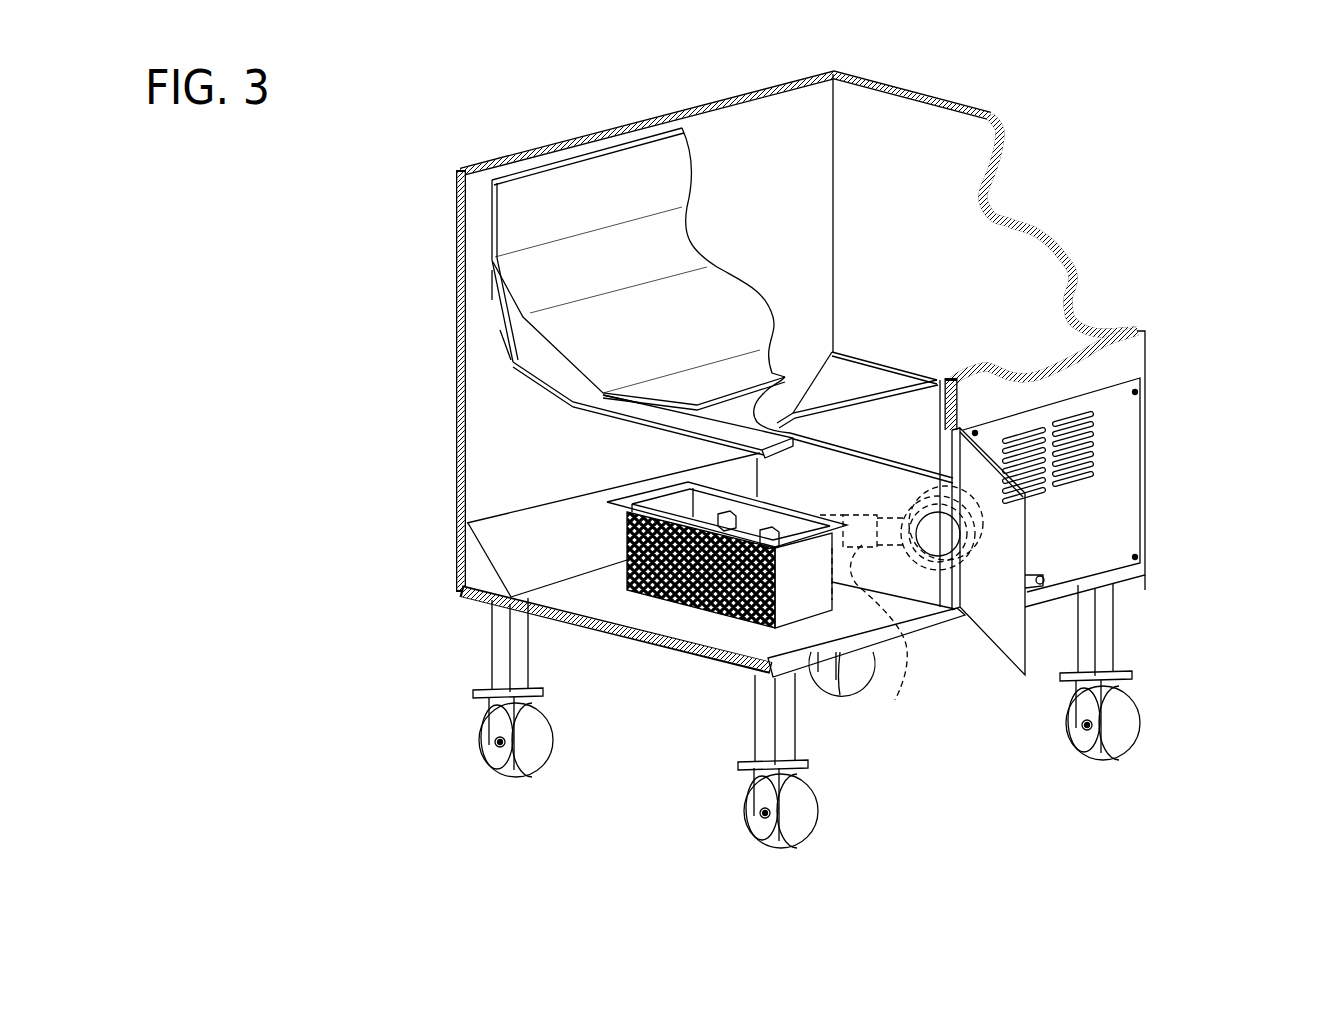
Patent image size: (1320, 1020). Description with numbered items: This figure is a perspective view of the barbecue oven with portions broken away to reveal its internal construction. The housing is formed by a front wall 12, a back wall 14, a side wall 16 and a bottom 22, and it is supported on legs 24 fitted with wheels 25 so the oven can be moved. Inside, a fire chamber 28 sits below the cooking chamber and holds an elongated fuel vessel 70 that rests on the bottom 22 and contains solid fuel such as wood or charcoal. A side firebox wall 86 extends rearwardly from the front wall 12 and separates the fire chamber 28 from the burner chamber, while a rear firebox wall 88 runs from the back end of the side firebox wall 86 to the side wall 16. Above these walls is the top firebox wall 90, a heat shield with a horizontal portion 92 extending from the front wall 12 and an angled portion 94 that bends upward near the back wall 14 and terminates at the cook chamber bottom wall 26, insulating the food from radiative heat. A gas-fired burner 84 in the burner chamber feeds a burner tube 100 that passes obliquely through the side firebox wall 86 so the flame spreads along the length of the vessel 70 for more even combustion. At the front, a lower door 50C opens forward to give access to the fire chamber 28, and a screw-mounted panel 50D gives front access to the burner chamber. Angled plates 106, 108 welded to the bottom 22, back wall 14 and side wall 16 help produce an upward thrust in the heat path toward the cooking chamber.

The front wall 12 is at (1125, 358).
The back wall 14 is at (717, 102).
The side wall 16 is at (1007, 143).
The bottom 22 is at (603, 630).
The legs 24 is at (497, 638).
The wheels 25 is at (490, 750).
The cook chamber bottom wall 26 is at (537, 207).
The fire chamber 28 is at (560, 460).
The lower door 50C is at (1022, 700).
The panel 50D is at (1117, 484).
The fuel vessel 70 is at (783, 600).
The burner 84 is at (1180, 579).
The side firebox wall 86 is at (900, 580).
The rear firebox wall 88 is at (867, 373).
The top firebox wall 90 is at (480, 283).
The horizontal portion 92 is at (613, 420).
The angled portion 94 is at (507, 360).
The burner tube 100 is at (895, 700).
The angled plate 106 is at (495, 540).
The angled plate 108 is at (897, 410).